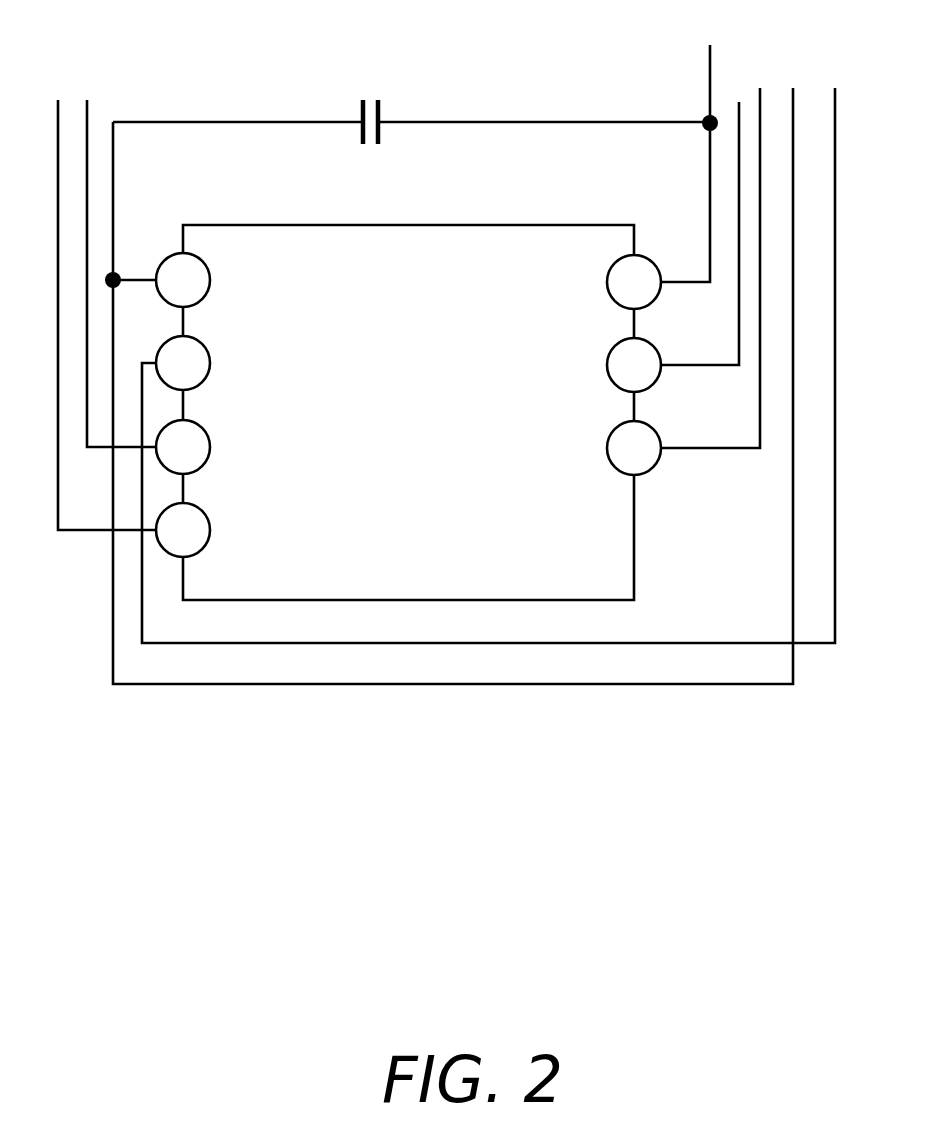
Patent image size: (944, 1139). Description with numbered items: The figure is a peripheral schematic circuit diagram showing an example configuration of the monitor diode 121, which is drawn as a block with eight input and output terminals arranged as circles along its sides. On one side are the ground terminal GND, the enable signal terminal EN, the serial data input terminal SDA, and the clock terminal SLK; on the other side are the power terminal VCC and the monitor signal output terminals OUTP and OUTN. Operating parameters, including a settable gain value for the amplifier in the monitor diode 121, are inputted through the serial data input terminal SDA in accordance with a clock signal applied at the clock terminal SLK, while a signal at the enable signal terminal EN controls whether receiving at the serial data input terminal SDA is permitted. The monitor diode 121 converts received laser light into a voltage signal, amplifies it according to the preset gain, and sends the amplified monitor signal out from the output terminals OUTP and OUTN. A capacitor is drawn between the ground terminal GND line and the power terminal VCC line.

The monitor diode 121 is at (446, 342).
The ground terminal GND is at (213, 280).
The enable signal terminal EN is at (208, 364).
The serial data input terminal SDA is at (212, 447).
The clock terminal SLK is at (212, 530).
The power terminal VCC is at (601, 282).
The monitor signal output terminal OUTP is at (598, 365).
The monitor signal output terminal OUTN is at (598, 448).